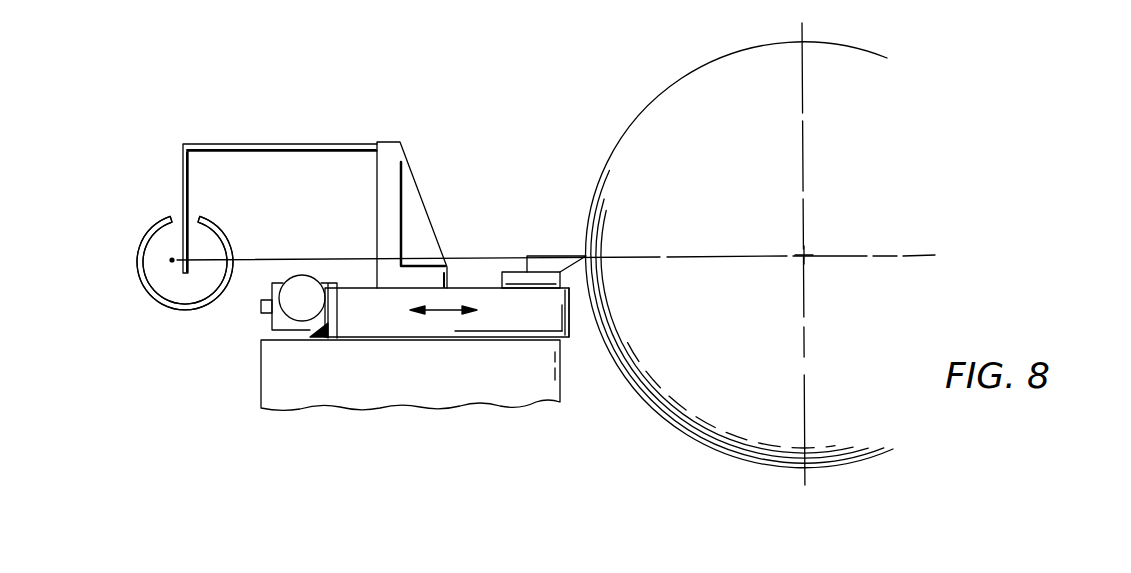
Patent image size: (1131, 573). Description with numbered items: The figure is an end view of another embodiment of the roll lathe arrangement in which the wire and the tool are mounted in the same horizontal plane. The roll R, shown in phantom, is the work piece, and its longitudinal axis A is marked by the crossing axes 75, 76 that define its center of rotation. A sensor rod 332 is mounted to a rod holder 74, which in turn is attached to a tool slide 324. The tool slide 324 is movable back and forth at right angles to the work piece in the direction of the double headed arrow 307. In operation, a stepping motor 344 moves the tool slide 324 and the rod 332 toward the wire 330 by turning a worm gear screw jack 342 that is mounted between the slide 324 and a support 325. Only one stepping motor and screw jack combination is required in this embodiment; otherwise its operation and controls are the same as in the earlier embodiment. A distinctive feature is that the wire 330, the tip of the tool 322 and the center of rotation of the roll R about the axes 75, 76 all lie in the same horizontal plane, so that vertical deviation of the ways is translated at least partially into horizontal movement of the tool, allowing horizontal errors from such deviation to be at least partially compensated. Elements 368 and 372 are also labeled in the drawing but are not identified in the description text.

The rod holder 74 is at (418, 164).
The axis of the roll center of rotation 75 is at (806, 414).
The axis of the roll center of rotation 76 is at (876, 257).
The roll R is at (653, 100).
The longitudinal axis of the roll A is at (801, 250).
The double headed arrow 307 is at (453, 313).
The tool 322 is at (549, 256).
The tool slide 324 is at (570, 318).
The support 325 is at (410, 389).
The wire 330 is at (165, 262).
The sensor rod 332 is at (183, 166).
The worm gear screw jack 342 is at (270, 319).
The stepping motor 344 is at (294, 274).
The guide ring 368 is at (209, 216).
The guide block 372 is at (502, 276).